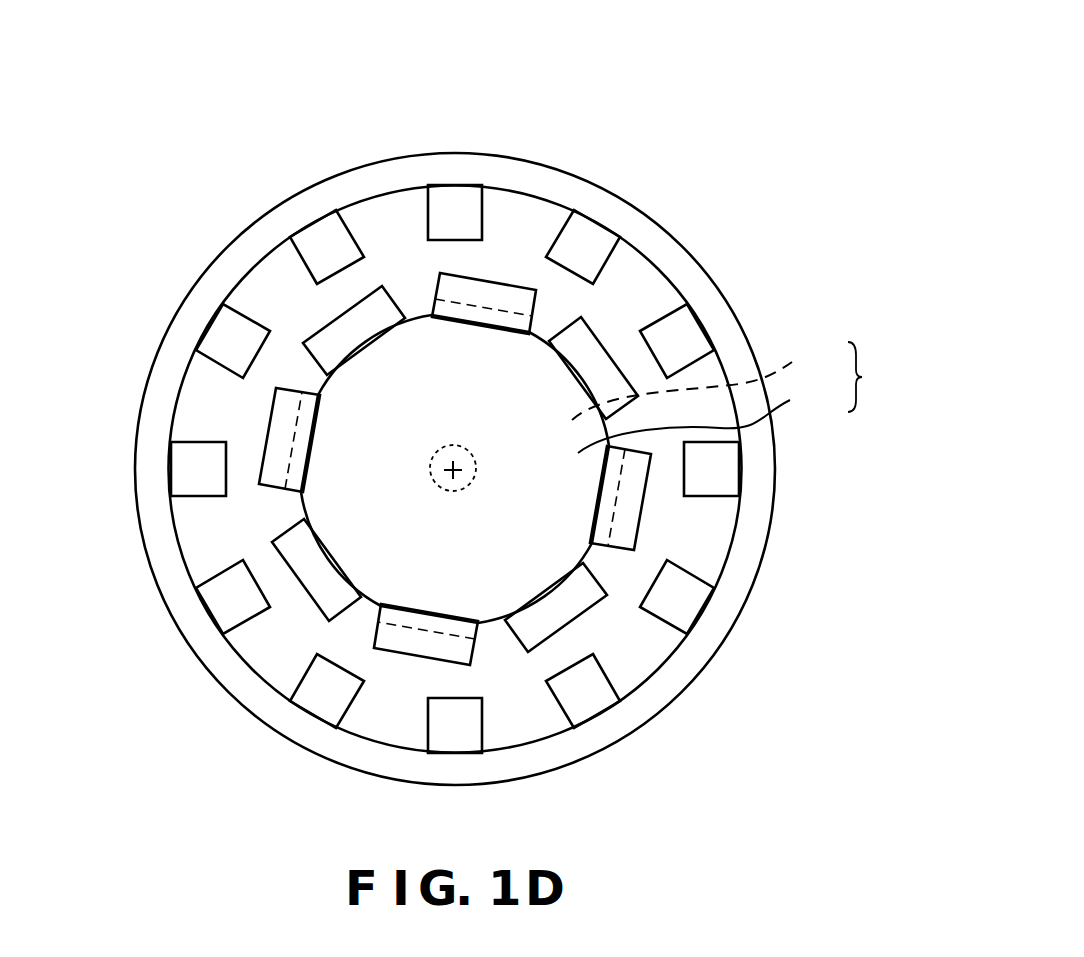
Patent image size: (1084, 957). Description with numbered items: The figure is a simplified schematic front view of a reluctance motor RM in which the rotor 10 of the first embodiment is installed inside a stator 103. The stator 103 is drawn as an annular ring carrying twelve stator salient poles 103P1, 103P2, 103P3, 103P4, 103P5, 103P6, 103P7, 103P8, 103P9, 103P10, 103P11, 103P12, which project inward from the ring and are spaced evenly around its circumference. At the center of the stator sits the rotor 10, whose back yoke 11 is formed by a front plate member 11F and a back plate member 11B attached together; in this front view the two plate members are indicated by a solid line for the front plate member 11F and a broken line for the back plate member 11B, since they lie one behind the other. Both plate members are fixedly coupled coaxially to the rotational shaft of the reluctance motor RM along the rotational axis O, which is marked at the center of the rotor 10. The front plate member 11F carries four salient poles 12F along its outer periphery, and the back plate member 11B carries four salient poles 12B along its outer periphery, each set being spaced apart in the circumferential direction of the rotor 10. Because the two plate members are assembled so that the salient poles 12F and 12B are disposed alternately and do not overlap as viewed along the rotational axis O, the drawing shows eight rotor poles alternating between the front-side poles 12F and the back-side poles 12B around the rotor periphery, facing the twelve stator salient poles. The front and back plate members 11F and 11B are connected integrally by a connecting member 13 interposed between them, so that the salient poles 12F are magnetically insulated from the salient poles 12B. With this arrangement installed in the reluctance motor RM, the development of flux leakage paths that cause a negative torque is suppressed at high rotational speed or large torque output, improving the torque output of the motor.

The reluctance motor RM is at (688, 82).
The rotor 10 is at (382, 279).
The back yoke 11 is at (874, 377).
The back plate member 11B is at (709, 379).
The front plate member 11F is at (710, 419).
The salient poles 12F is at (487, 281).
The salient poles 12B is at (322, 328).
The connecting member 13 is at (452, 445).
The rotational axis O is at (456, 472).
The stator 103 is at (657, 213).
The stator salient pole 103P1 is at (420, 196).
The stator salient pole 103P2 is at (572, 215).
The stator salient pole 103P3 is at (676, 288).
The stator salient pole 103P4 is at (705, 496).
The stator salient pole 103P5 is at (710, 573).
The stator salient pole 103P6 is at (620, 685).
The stator salient pole 103P7 is at (481, 740).
The stator salient pole 103P8 is at (343, 712).
The stator salient pole 103P9 is at (233, 630).
The stator salient pole 103P10 is at (182, 497).
The stator salient pole 103P11 is at (197, 352).
The stator salient pole 103P12 is at (296, 252).